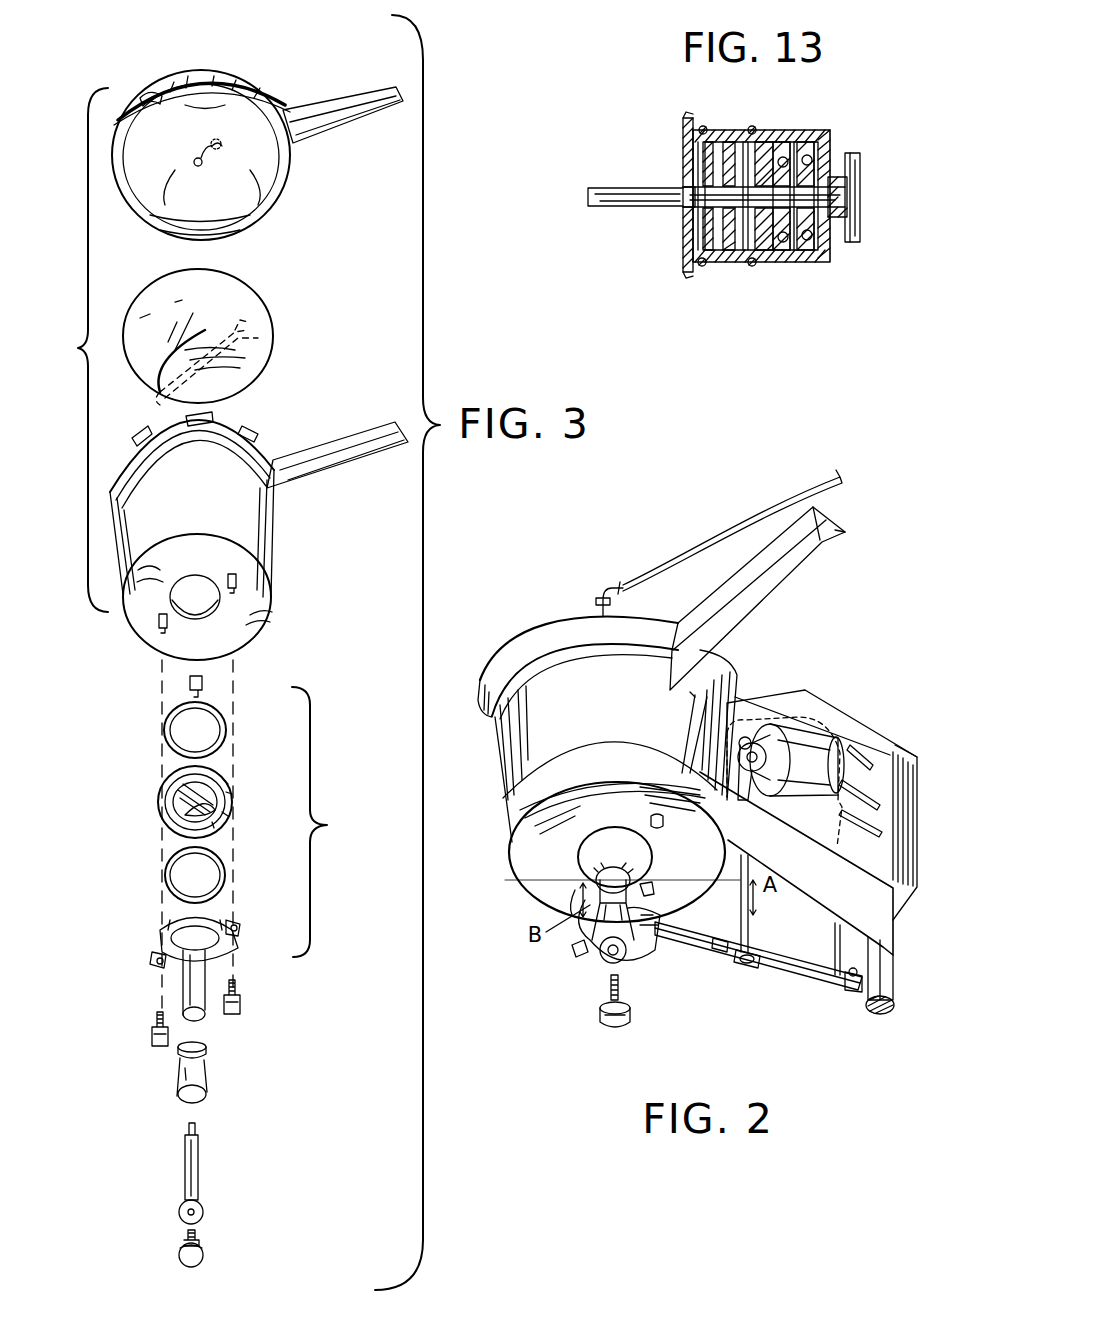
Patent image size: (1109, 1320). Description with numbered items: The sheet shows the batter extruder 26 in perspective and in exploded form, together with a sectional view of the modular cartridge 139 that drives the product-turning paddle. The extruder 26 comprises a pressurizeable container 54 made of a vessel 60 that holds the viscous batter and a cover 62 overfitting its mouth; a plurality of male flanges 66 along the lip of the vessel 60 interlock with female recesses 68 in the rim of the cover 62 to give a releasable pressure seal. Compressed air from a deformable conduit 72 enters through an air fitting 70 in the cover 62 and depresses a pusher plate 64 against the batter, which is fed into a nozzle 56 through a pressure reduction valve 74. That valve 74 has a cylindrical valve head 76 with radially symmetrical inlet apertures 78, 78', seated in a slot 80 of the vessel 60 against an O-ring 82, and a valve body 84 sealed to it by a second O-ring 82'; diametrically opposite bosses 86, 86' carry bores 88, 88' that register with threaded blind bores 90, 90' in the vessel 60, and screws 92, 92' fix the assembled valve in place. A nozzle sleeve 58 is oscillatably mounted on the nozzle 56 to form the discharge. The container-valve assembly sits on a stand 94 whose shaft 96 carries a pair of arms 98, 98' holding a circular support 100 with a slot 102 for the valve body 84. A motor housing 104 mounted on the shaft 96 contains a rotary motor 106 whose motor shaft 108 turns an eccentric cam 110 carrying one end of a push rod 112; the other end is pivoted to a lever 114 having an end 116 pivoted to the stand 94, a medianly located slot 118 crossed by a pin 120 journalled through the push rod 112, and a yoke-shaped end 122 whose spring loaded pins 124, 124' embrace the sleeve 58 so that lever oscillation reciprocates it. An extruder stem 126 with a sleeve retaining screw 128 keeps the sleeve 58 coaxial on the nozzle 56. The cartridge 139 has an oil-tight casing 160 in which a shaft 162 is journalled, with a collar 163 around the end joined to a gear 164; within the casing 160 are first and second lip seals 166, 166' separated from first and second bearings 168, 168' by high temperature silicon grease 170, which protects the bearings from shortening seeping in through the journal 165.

In FIG. 2, the extruder 26 is at (852, 680).
In FIG. 3, the pressurizeable container 54 is at (77, 350).
In FIG. 2, the pressurizeable container 54 is at (497, 798).
In FIG. 3, the nozzle 56 is at (203, 997).
In FIG. 3, the nozzle sleeve 58 is at (182, 1082).
In FIG. 2, the nozzle sleeve 58 is at (603, 960).
In FIG. 3, the vessel 60 is at (284, 527).
In FIG. 3, the cover 62 is at (158, 193).
In FIG. 3, the pusher plate 64 is at (256, 338).
In FIG. 3, the male flanges 66 is at (254, 430).
In FIG. 3, the female recesses 68 is at (162, 92).
In FIG. 3, the air fitting 70 is at (207, 165).
In FIG. 2, the air fitting 70 is at (600, 600).
In FIG. 2, the deformable conduit 72 is at (702, 540).
In FIG. 3, the pressure reduction valve 74 is at (324, 822).
In FIG. 3, the cylindrical valve head 76 is at (265, 850).
In FIG. 3, the valve inlet aperture 78 is at (172, 802).
In FIG. 3, the valve inlet aperture 78' is at (231, 813).
In FIG. 3, the slot 80 is at (197, 582).
In FIG. 3, the O-ring 82 is at (219, 727).
In FIG. 3, the O-ring 82' is at (172, 875).
In FIG. 3, the valve body 84 is at (222, 955).
In FIG. 3, the boss 86 is at (260, 925).
In FIG. 3, the boss 86' is at (137, 953).
In FIG. 3, the bore 88 is at (253, 910).
In FIG. 3, the bore 88' is at (136, 979).
In FIG. 3, the threaded blind bore 90 is at (266, 596).
In FIG. 3, the threaded blind bore 90' is at (140, 641).
In FIG. 3, the screw 92 is at (252, 1008).
In FIG. 3, the screw 92' is at (133, 1033).
In FIG. 2, the stand 94 is at (896, 966).
In FIG. 2, the shaft 96 is at (892, 1005).
In FIG. 2, the arm 98 is at (796, 886).
In FIG. 2, the arm 98' is at (799, 923).
In FIG. 2, the circular support 100 is at (524, 876).
In FIG. 2, the slot 102 is at (648, 850).
In FIG. 2, the motor housing 104 is at (912, 762).
In FIG. 2, the rotary motor 106 is at (832, 745).
In FIG. 2, the motor shaft 108 is at (771, 758).
In FIG. 2, the eccentric cam 110 is at (746, 736).
In FIG. 2, the push rod 112 is at (750, 886).
In FIG. 2, the lever 114 is at (790, 978).
In FIG. 2, the end 116 is at (847, 985).
In FIG. 2, the slot 118 is at (745, 955).
In FIG. 2, the pin 120 is at (743, 962).
In FIG. 2, the yoke-shaped end 122 is at (655, 945).
In FIG. 2, the spring loaded pin 124 is at (673, 888).
In FIG. 2, the spring loaded pin 124' is at (545, 962).
In FIG. 3, the extruder stem 126 is at (200, 1170).
In FIG. 3, the sleeve retaining screw 128 is at (203, 1248).
In FIG. 2, the sleeve retaining screw 128 is at (604, 1020).
In FIG. 13, the cartridge 139 is at (822, 127).
In FIG. 13, the casing 160 is at (724, 132).
In FIG. 13, the shaft 162 is at (652, 186).
In FIG. 13, the collar 163 is at (834, 178).
In FIG. 13, the gear 164 is at (862, 226).
In FIG. 13, the journal 165 is at (682, 186).
In FIG. 13, the lip seal 166 is at (675, 225).
In FIG. 13, the lip seal 166' is at (713, 236).
In FIG. 13, the bearing 168 is at (797, 231).
In FIG. 13, the bearing 168' is at (836, 220).
In FIG. 13, the high temperature silicon grease 170 is at (770, 252).